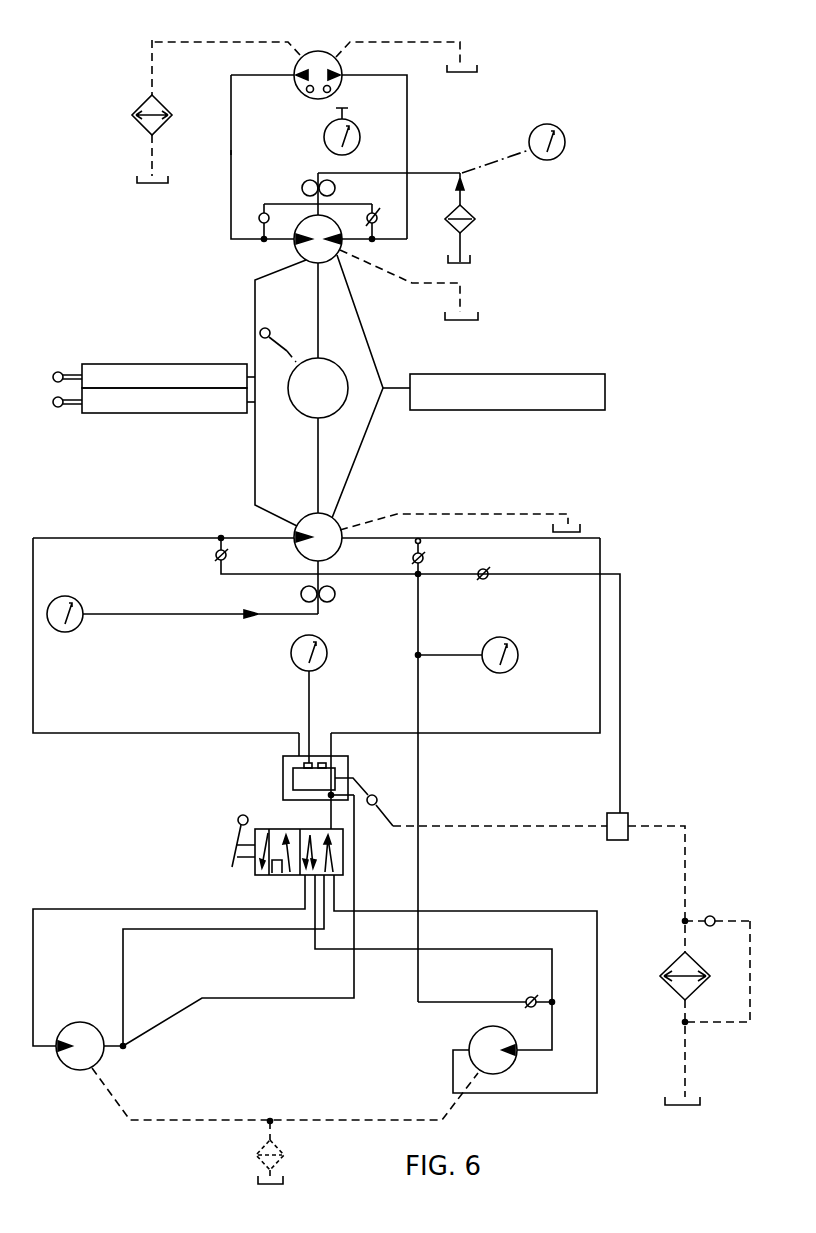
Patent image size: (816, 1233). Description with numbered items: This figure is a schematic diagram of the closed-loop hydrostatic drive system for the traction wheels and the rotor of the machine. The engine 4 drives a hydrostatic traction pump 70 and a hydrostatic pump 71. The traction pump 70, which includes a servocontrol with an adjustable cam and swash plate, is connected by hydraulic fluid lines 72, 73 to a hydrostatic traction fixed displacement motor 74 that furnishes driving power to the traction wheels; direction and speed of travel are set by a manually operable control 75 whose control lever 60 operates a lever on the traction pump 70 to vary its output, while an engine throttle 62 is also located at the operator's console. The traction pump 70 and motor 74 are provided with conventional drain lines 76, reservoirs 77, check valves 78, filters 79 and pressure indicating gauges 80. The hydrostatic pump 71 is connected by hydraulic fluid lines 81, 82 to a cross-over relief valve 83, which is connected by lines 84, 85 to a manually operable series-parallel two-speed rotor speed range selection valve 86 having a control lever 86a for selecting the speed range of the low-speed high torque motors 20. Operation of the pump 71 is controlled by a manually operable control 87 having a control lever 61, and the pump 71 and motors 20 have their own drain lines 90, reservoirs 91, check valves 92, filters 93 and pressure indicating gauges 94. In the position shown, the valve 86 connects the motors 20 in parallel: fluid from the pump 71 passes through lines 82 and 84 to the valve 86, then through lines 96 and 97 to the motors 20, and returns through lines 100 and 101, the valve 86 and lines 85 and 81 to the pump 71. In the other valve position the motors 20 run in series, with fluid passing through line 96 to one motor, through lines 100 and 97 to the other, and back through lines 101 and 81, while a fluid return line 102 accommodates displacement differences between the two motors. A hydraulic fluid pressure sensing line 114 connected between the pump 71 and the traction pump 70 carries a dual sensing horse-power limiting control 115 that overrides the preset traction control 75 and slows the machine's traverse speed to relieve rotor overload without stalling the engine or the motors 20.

The engine 4 is at (311, 397).
The low-speed high torque motors 20 is at (71, 1053).
The control lever 60 is at (56, 372).
The control lever 61 is at (56, 407).
The engine throttle 62 is at (283, 334).
The hydrostatic traction pump 70 is at (328, 261).
The hydrostatic pump 71 is at (310, 535).
The hydraulic fluid line 72 is at (407, 117).
The hydraulic fluid line 73 is at (231, 152).
The hydrostatic traction fixed displacement motor 74 is at (309, 77).
The manually operable control 75 is at (102, 364).
The drain lines 76 is at (245, 40).
The reservoirs 77 is at (135, 181).
The check valves 78 is at (261, 212).
The filters 79 is at (165, 108).
The pressure indicating gauges 80 is at (360, 140).
The hydraulic fluid line 81 is at (495, 538).
The hydraulic fluid line 82 is at (115, 537).
The cross-over relief valve 83 is at (283, 782).
The hydraulic fluid line 84 is at (309, 818).
The hydraulic fluid line 85 is at (334, 820).
The series-parallel two-speed rotor speed range selection valve 86 is at (225, 848).
The control lever 86a is at (238, 822).
The manually operable control 87 is at (100, 413).
The drain lines 90 is at (485, 513).
The reservoirs 91 is at (583, 530).
The check valves 92 is at (214, 560).
The filters 93 is at (698, 966).
The pressure indicating gauges 94 is at (84, 606).
The line 96 is at (168, 909).
The line 97 is at (450, 949).
The line 100 is at (225, 930).
The line 101 is at (530, 911).
The fluid return line 102 is at (224, 1000).
The hydraulic fluid pressure sensing line 114 is at (360, 458).
The dual sensing horse-power limiting control 115 is at (605, 387).